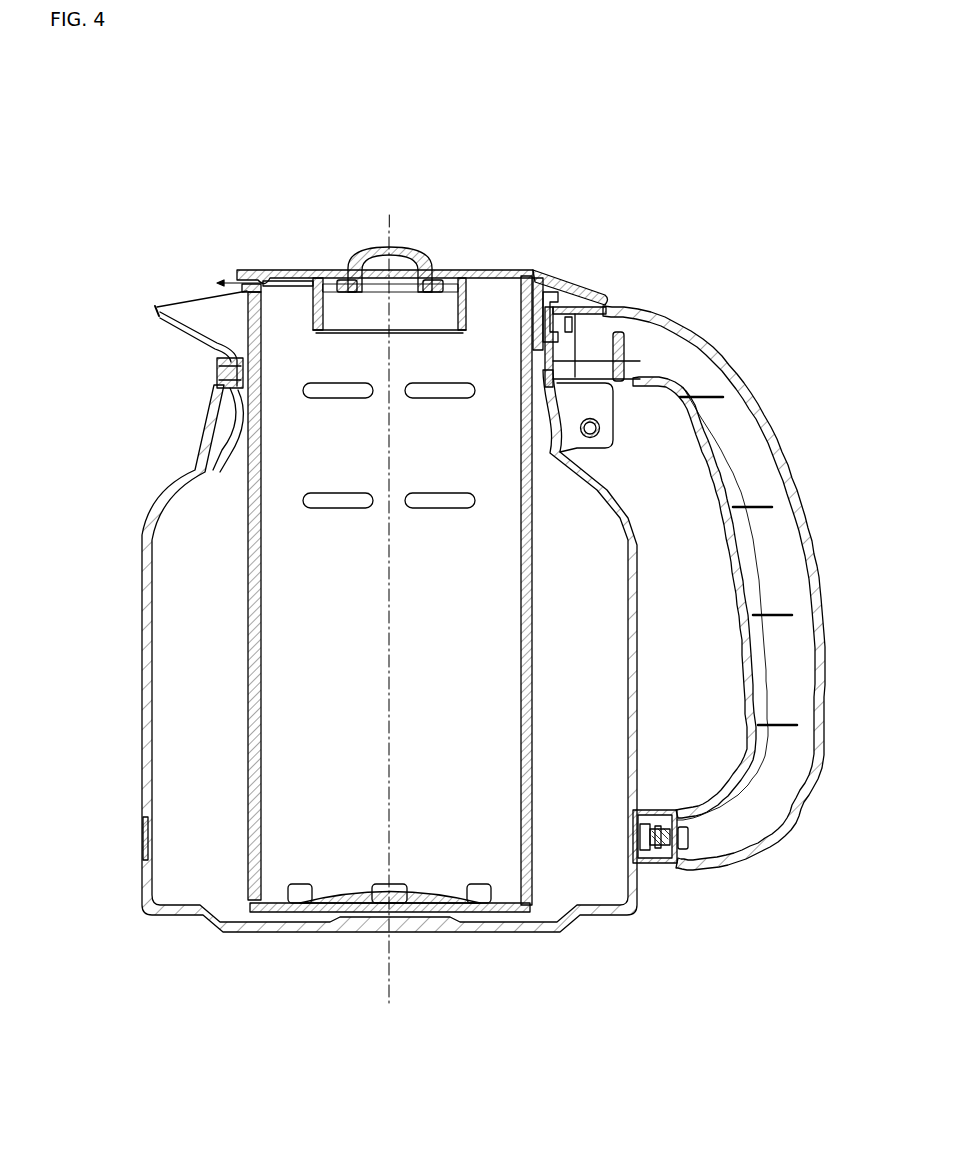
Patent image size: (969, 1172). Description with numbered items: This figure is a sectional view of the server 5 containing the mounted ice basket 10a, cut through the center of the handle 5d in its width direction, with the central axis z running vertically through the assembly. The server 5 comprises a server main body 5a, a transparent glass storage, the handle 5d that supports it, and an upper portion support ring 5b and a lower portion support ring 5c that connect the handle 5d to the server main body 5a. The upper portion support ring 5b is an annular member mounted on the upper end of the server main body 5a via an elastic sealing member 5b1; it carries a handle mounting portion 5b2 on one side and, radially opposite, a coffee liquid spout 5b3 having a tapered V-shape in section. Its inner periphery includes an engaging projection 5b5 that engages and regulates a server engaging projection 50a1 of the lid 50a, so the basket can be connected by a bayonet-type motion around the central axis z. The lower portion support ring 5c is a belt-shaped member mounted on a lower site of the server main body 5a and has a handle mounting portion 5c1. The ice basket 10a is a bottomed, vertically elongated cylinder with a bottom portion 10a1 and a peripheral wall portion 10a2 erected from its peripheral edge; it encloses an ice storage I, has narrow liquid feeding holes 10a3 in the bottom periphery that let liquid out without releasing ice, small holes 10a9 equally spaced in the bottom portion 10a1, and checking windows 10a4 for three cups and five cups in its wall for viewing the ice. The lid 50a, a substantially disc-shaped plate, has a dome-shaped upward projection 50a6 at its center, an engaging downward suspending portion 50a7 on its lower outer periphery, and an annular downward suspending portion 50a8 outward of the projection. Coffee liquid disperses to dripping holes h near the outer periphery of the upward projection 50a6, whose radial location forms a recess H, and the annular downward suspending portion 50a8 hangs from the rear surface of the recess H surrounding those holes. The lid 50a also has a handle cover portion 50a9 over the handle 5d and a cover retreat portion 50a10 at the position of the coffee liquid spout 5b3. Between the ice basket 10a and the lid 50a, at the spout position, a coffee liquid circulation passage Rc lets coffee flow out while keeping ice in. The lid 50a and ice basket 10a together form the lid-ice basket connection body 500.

The lid-ice basket connection body 500 is at (305, 229).
The lid 50a is at (280, 268).
The cover retreat portion 50a10 is at (237, 272).
The upward projection 50a6 is at (418, 248).
The engaging downward suspending portion 50a7 is at (548, 290).
The annular downward suspending portion 50a8 is at (466, 292).
The handle cover portion 50a9 is at (590, 292).
The server engaging projection 50a1 is at (555, 340).
The server 5 is at (657, 904).
The server main body 5a is at (168, 495).
The upper portion support ring 5b is at (210, 400).
The elastic sealing member 5b1 is at (217, 372).
The handle mounting portion 5b2 is at (572, 308).
The coffee liquid spout 5b3 is at (215, 296).
The engaging projection 5b5 is at (530, 280).
The lower portion support ring 5c is at (143, 845).
The handle mounting portion 5c1 is at (665, 868).
The handle 5d is at (797, 503).
The ice basket 10a is at (531, 632).
The bottom portion 10a1 is at (423, 907).
The peripheral wall portion 10a2 is at (533, 762).
The liquid feeding hole 10a3 is at (297, 905).
The checking windows 10a4 is at (367, 492).
The small holes 10a9 is at (488, 908).
The dripping holes h is at (334, 268).
The recess H is at (464, 272).
The ice storage I is at (353, 674).
The coffee liquid circulation passage Rc is at (270, 282).
The central axis z is at (389, 629).